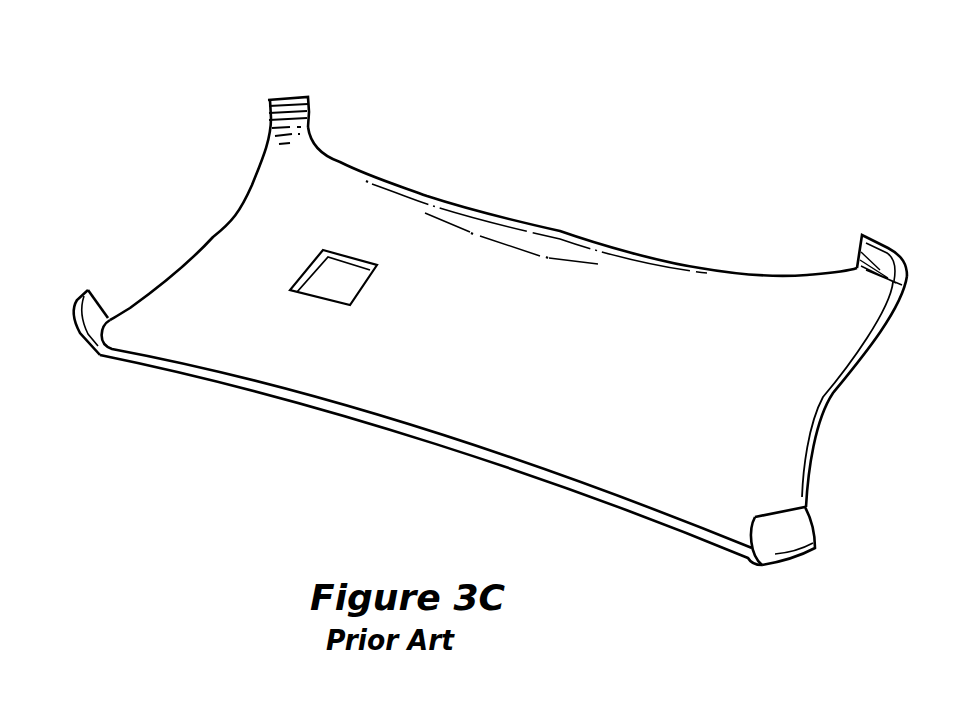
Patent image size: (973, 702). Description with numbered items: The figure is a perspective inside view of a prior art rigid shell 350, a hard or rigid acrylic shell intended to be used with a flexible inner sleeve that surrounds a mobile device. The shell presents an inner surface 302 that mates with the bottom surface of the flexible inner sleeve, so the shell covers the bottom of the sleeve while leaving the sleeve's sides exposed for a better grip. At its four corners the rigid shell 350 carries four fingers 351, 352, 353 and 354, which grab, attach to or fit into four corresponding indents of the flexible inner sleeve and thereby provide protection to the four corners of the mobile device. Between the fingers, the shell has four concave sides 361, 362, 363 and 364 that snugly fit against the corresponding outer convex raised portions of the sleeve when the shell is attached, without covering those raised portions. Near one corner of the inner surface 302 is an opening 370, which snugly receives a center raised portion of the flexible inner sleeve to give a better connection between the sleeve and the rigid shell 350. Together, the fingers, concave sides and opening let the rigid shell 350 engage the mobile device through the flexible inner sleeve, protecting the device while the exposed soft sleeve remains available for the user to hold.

The rigid shell 350 is at (725, 138).
The inner surface 302 is at (672, 387).
The finger 351 is at (88, 291).
The finger 352 is at (285, 97).
The finger 353 is at (800, 523).
The finger 354 is at (877, 238).
The concave side 361 is at (212, 237).
The concave side 362 is at (516, 221).
The concave side 363 is at (838, 384).
The concave side 364 is at (358, 417).
The opening 370 is at (350, 288).